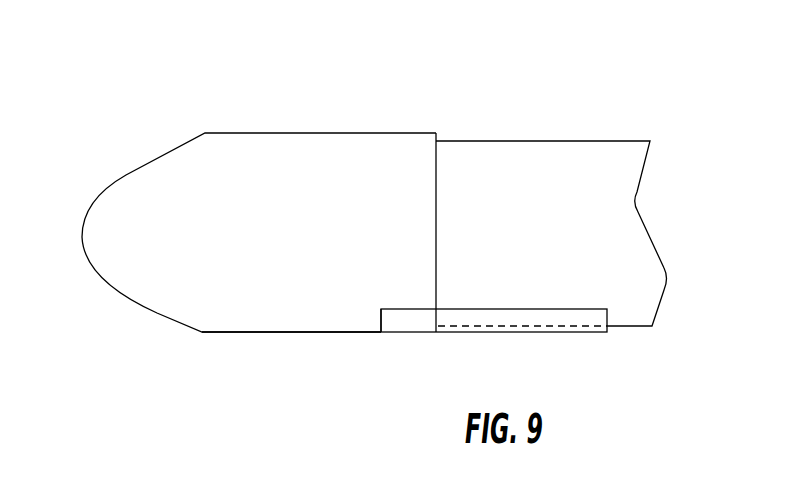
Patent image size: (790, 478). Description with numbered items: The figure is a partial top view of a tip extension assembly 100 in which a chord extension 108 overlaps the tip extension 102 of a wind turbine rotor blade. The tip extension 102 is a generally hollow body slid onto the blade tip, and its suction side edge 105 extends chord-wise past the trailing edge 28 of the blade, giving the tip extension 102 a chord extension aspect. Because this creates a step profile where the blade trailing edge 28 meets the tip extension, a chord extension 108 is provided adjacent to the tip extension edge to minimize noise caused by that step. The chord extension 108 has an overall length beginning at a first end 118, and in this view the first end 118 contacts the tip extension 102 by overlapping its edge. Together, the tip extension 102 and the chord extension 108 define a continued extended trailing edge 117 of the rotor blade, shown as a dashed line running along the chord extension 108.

The tip extension assembly 100 is at (170, 92).
The tip extension 102 is at (155, 312).
The trailing edge 28 is at (622, 326).
The chord extension 108 is at (512, 308).
The extended trailing edge 117 is at (467, 327).
The first end 118 is at (381, 317).
The suction side edge 105 is at (363, 333).